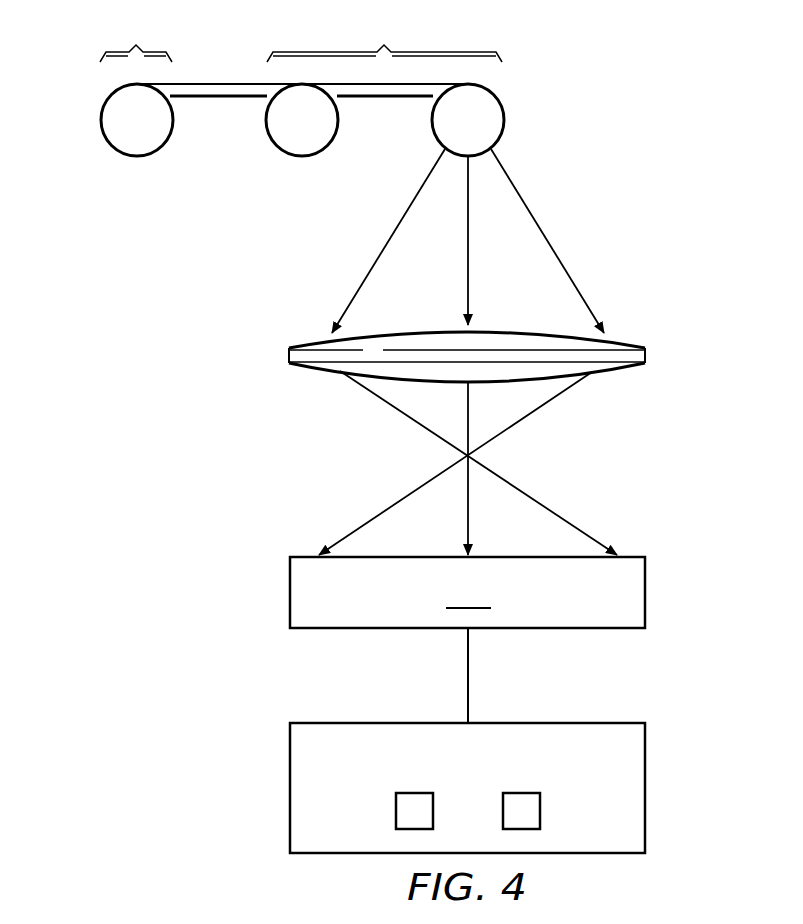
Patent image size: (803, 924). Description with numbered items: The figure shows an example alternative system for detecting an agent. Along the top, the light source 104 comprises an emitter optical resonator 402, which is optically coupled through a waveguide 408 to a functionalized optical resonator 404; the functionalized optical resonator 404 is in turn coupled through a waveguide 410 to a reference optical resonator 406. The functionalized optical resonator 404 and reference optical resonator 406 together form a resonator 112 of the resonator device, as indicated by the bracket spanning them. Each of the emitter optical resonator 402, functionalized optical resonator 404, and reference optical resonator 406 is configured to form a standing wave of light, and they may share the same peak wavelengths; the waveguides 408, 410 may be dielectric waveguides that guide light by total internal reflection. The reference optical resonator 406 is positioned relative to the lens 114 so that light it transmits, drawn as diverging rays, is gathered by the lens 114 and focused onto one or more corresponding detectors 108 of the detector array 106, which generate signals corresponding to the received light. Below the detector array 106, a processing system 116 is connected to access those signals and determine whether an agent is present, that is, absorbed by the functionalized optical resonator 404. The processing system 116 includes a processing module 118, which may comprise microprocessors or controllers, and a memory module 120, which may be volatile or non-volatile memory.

The light source 104 is at (136, 38).
The resonator 112 is at (384, 38).
The emitter optical resonator 402 is at (100, 119).
The functionalized optical resonator 404 is at (301, 157).
The reference optical resonator 406 is at (505, 119).
The waveguide 408 is at (219, 101).
The waveguide 410 is at (384, 101).
The lens 114 is at (648, 356).
The detector array 106 is at (657, 592).
The detector 108 is at (468, 594).
The processing system 116 is at (657, 788).
The processing module 118 is at (396, 812).
The memory module 120 is at (540, 810).